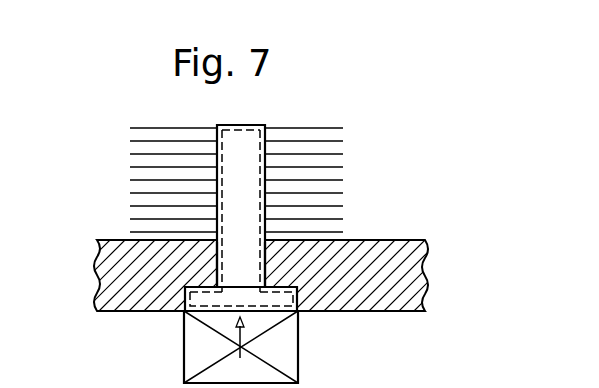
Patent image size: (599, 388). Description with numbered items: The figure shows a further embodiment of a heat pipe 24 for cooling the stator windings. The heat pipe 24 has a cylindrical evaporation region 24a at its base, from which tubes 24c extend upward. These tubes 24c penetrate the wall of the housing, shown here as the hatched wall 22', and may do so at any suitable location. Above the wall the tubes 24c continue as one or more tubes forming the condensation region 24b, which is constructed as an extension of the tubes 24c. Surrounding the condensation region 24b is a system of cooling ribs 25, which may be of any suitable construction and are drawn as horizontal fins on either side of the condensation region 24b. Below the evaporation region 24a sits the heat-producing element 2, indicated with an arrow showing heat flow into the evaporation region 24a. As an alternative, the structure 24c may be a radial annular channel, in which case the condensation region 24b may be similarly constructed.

The heat-generating component 2 is at (197, 355).
The wall plate 22' is at (260, 275).
The heat pipe 24 is at (254, 222).
The cylindrical evaporation region 24a is at (281, 298).
The condensation region tubes 24b is at (247, 142).
The tubes 24c is at (247, 267).
The cooling ribs 25 is at (175, 128).